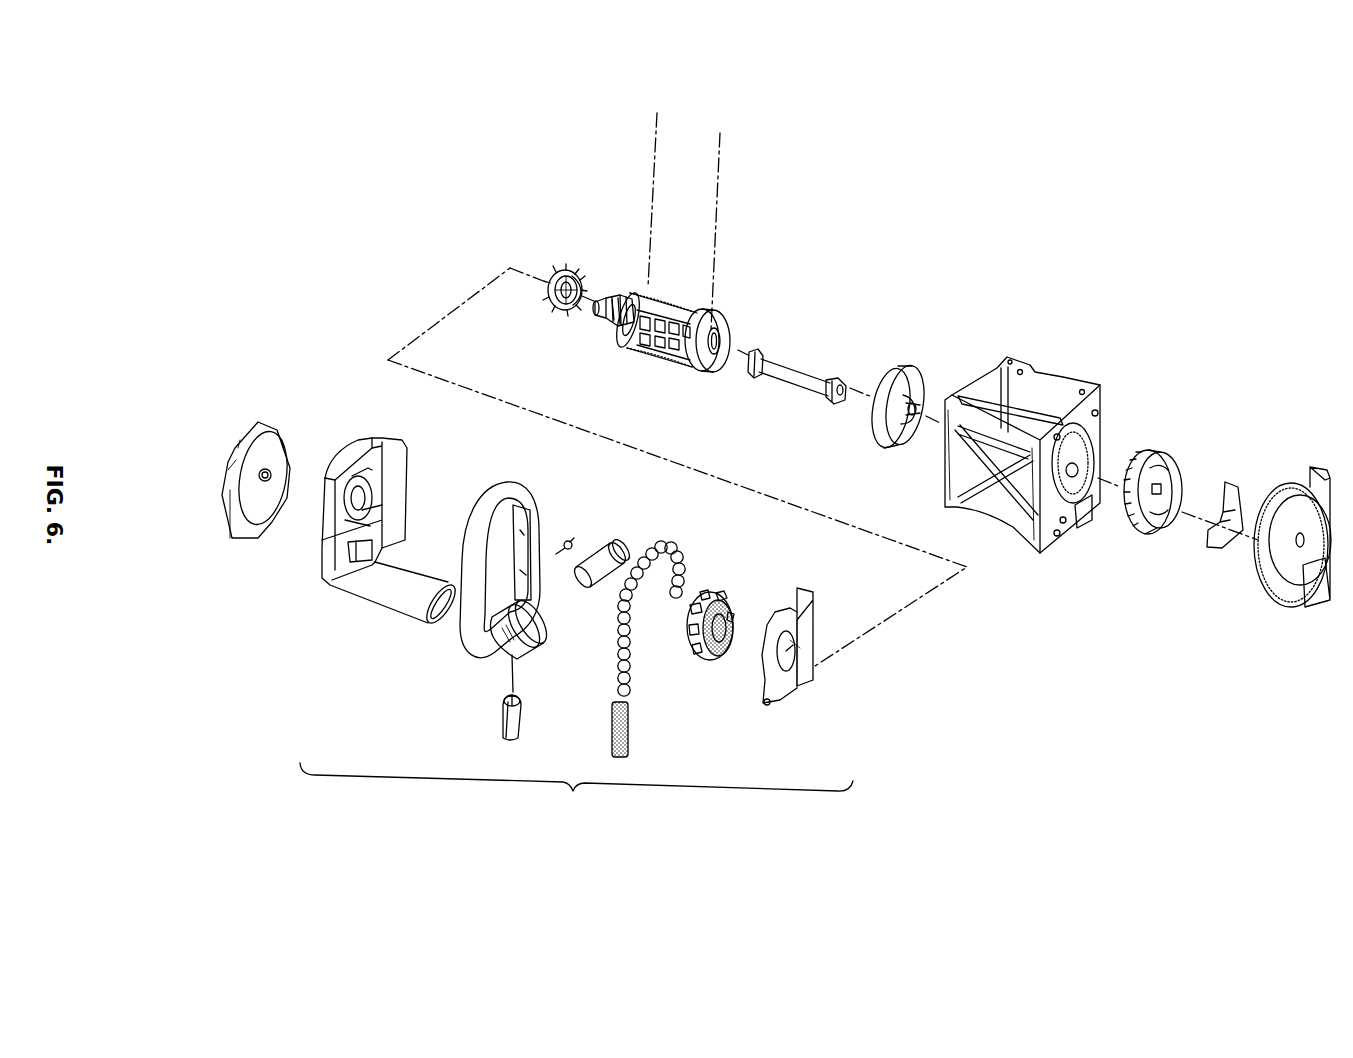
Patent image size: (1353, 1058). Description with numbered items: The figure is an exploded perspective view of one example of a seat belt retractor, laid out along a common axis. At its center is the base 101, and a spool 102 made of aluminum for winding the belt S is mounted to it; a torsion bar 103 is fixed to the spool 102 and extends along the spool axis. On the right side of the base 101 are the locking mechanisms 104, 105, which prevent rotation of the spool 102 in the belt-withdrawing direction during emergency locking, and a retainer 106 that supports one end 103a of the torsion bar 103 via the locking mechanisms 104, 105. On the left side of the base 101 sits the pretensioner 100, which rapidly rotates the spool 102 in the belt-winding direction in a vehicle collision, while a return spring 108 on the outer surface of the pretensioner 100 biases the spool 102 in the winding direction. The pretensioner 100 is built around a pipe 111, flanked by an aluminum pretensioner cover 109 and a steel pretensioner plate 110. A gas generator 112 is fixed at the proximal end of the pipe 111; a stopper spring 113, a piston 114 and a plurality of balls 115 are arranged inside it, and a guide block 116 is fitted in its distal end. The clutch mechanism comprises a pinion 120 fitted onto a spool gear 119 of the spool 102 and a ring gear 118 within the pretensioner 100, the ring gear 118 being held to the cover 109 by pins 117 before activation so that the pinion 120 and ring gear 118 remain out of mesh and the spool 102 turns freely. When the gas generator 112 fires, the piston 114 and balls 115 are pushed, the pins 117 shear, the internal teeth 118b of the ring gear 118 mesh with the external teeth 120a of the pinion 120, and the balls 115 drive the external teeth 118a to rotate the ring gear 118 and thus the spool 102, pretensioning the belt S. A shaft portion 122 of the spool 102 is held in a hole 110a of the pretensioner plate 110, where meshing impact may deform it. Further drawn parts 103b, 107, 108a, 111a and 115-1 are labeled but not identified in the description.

The belt S is at (703, 166).
The pretensioner 100 is at (576, 791).
The base 101 is at (1052, 376).
The spool 102 is at (695, 308).
The torsion bar 103 is at (800, 368).
The one end of the torsion bar 103a is at (848, 378).
The bolt head 103b is at (755, 352).
The locking mechanism 104 is at (908, 378).
The locking mechanism 105 is at (1232, 485).
The retainer 106 is at (1297, 484).
The shaft 107 is at (597, 303).
The return spring 108 is at (273, 427).
The boss 108a is at (272, 468).
The pretensioner cover 109 is at (390, 450).
The pretensioner plate 110 is at (808, 605).
The hole 110a is at (805, 665).
The pipe 111 is at (528, 492).
The gate bar 111a is at (532, 575).
The gas generator 112 is at (613, 552).
The stopper spring 113 is at (610, 736).
The piston 114 is at (617, 692).
The balls 115 is at (618, 631).
The bead chain portion 115-1 is at (688, 570).
The guide block 116 is at (524, 714).
The pins 117 is at (325, 538).
The ring gear 118 is at (728, 668).
The external teeth of the ring gear 118a is at (725, 600).
The internal teeth of the ring gear 118b is at (732, 614).
The spool gear 119 is at (611, 316).
The pinion 120 is at (560, 270).
The external teeth of the pinion 120a is at (572, 276).
The shaft portion 122 is at (624, 292).